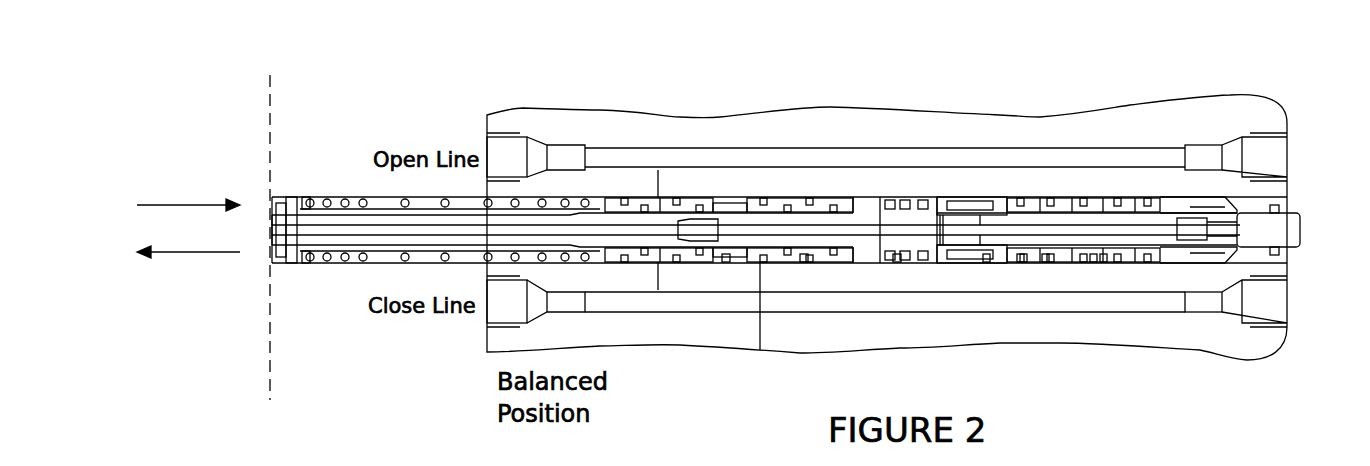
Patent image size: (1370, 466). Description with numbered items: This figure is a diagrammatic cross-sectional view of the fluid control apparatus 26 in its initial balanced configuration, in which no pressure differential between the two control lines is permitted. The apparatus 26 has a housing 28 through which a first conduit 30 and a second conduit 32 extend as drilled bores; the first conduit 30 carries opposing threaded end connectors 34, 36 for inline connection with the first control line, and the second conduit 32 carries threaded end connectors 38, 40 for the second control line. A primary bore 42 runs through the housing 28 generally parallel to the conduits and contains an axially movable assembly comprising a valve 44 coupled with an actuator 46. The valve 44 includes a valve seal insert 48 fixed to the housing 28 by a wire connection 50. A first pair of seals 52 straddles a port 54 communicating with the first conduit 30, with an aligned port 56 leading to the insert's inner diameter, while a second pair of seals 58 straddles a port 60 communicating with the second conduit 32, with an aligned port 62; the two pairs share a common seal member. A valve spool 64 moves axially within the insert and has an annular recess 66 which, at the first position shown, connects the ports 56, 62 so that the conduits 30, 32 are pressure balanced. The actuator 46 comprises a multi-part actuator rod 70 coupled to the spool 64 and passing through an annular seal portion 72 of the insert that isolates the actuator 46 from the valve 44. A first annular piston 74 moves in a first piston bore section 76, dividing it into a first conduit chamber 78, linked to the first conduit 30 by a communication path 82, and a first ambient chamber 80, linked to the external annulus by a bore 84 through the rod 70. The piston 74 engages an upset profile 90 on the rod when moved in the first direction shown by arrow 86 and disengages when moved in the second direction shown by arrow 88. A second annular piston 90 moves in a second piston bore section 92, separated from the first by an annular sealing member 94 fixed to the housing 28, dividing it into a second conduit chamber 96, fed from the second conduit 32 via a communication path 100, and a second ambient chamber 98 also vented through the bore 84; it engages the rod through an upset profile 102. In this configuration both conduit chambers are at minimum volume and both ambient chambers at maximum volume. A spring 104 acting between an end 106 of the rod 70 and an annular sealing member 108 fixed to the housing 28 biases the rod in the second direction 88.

The fluid control apparatus 26 is at (1277, 55).
The housing 28 is at (1270, 112).
The first conduit 30 is at (1175, 300).
The second conduit 32 is at (605, 198).
The threaded end connector 34 is at (505, 318).
The threaded end connector 36 is at (1265, 307).
The threaded end connector 38 is at (496, 145).
The threaded end connector 40 is at (1265, 152).
The primary bore 42 is at (505, 195).
The valve 44 is at (1000, 192).
The actuator 46 is at (766, 268).
The valve seal insert 48 is at (1178, 198).
The wire connection 50 is at (888, 263).
The first pair of seals 52 is at (1118, 198).
The port 54 is at (1093, 263).
The aligned port 56 is at (1104, 263).
The second pair of seals 58 is at (1044, 263).
The port 60 is at (1048, 198).
The aligned port 62 is at (1022, 198).
The valve spool 64 is at (1150, 226).
The annular recess 66 is at (987, 263).
The actuator rod 70 is at (342, 243).
The annular seal portion 72 is at (925, 198).
The first annular piston 74 is at (818, 198).
The first piston bore section 76 is at (858, 198).
The first conduit chamber 78 is at (784, 198).
The first ambient chamber 80 is at (888, 198).
The communication path 82 is at (802, 265).
The bore 84 is at (313, 253).
The arrow 86 is at (188, 205).
The arrow 88 is at (188, 253).
The upset profile / second annular piston 90 is at (692, 198).
The second piston bore section 92 is at (718, 198).
The annular sealing member 94 is at (746, 198).
The second conduit chamber 96 is at (632, 198).
The second ambient chamber 98 is at (724, 263).
The communication path 100 is at (658, 197).
The upset profile 102 is at (710, 245).
The spring 104 is at (362, 197).
The end 106 is at (287, 198).
The annular sealing member 108 is at (608, 157).